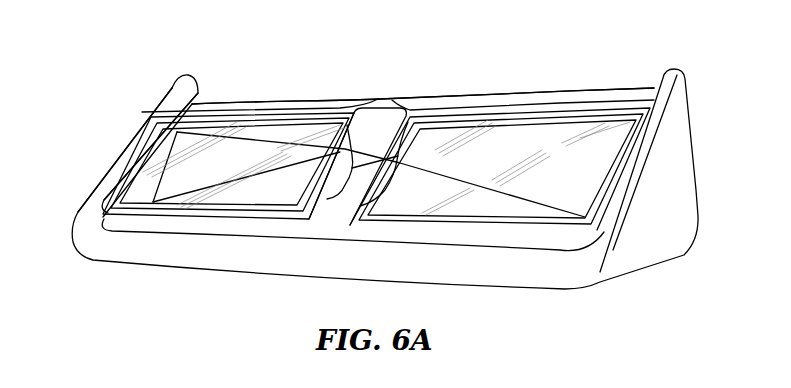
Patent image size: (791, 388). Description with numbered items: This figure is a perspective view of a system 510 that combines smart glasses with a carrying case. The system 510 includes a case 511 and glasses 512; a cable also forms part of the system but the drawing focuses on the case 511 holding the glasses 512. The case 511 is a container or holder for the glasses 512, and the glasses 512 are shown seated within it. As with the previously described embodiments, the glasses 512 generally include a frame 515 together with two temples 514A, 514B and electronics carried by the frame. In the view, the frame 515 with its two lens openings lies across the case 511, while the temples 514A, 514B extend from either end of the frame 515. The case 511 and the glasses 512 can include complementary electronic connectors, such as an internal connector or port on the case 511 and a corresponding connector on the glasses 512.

The system 510 is at (376, 160).
The case 511 is at (110, 124).
The glasses 512 is at (272, 70).
The frame 515 is at (382, 103).
The temple 514A is at (163, 202).
The temple 514B is at (502, 193).